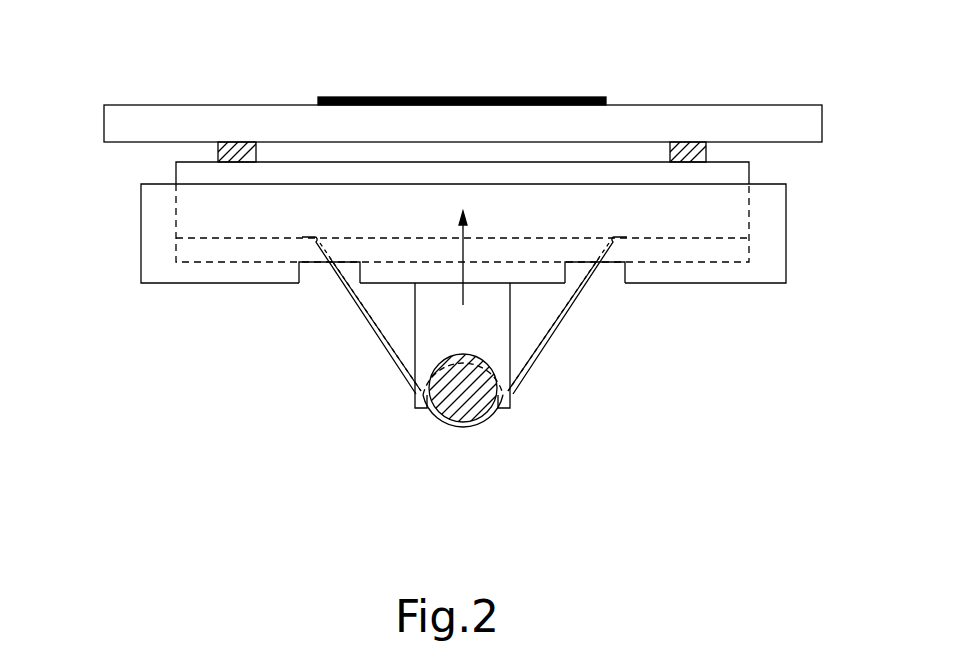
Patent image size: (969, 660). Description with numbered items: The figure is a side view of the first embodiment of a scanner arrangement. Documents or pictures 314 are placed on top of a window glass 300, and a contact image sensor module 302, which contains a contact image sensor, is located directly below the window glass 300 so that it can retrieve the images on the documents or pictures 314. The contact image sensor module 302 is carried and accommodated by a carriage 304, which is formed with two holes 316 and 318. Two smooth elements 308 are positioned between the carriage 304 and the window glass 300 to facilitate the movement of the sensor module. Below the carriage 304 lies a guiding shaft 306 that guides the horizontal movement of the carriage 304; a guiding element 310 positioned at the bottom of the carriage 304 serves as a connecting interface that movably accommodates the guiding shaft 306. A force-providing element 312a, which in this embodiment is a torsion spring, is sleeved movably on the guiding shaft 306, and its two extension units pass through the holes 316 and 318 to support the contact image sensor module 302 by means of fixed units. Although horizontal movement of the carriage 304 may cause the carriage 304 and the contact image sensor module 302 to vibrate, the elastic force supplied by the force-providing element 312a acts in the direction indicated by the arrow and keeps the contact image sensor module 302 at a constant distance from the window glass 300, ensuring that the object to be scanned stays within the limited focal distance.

The window glass 300 is at (807, 126).
The contact image sensor module 302 is at (733, 170).
The carriage 304 is at (140, 239).
The guiding shaft 306 is at (460, 408).
The smooth elements 308 is at (237, 141).
The guiding element 310 is at (417, 326).
The force-providing element 312a is at (551, 345).
The documents or pictures 314 is at (452, 96).
The hole 316 is at (607, 284).
The hole 318 is at (314, 284).